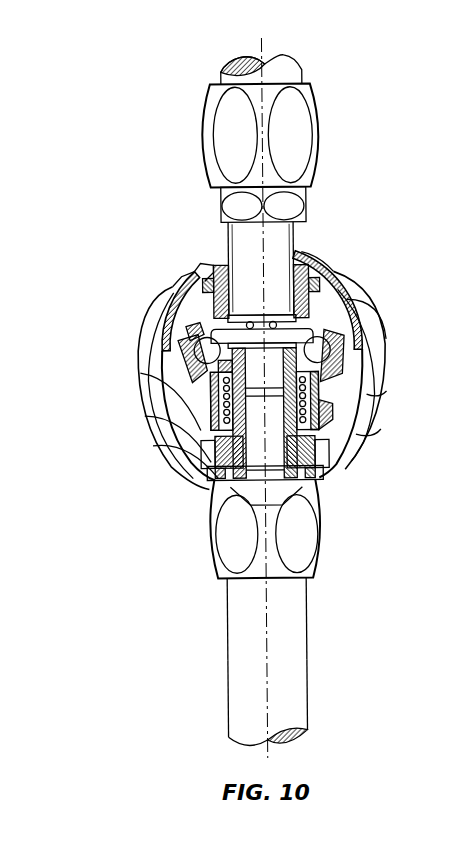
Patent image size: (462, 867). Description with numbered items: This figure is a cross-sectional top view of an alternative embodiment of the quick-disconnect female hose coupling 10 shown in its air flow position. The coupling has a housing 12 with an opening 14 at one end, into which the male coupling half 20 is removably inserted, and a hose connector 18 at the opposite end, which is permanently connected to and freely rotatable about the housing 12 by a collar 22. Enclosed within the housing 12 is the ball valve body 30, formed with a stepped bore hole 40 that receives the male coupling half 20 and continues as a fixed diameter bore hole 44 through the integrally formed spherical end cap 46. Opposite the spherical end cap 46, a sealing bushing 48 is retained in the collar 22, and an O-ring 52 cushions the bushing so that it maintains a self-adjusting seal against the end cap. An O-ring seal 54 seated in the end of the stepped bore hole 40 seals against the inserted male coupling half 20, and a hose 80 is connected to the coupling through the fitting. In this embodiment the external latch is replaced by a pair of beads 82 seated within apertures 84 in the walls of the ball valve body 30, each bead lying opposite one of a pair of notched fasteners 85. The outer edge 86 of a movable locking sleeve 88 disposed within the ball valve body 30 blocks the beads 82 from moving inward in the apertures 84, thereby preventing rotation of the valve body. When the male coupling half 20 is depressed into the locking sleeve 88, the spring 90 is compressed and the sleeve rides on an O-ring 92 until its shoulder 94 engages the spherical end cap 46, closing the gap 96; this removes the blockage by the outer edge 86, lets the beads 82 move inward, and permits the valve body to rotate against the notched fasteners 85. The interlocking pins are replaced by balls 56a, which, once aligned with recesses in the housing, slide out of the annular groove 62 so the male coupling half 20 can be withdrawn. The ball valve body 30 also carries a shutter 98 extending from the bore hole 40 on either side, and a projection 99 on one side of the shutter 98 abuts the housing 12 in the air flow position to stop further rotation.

The hose coupling 10 is at (146, 196).
The housing 12 is at (161, 400).
The opening 14 is at (326, 253).
The hose connector 18 is at (229, 592).
The male coupling half 20 is at (284, 232).
The collar 22 is at (206, 482).
The ball valve body 30 is at (322, 318).
The stepped bore hole 40 is at (222, 266).
The fixed diameter bore hole 44 is at (319, 482).
The spherical end cap 46 is at (314, 452).
The sealing bushing 48 is at (207, 524).
The O-ring 52 is at (214, 550).
The O-ring seal 54 is at (304, 376).
The balls 56a is at (184, 322).
The annular groove 62 is at (334, 290).
The hose 80 is at (238, 661).
The beads 82 is at (170, 334).
The apertures 84 is at (312, 322).
The notched fasteners 85 is at (176, 360).
The outer edge 86 is at (189, 395).
The locking sleeve 88 is at (199, 442).
The spring 90 is at (306, 396).
The O-ring 92 is at (306, 420).
The shoulder 94 is at (204, 470).
The gap 96 is at (306, 382).
The shutter 98 is at (173, 342).
The projection 99 is at (196, 268).